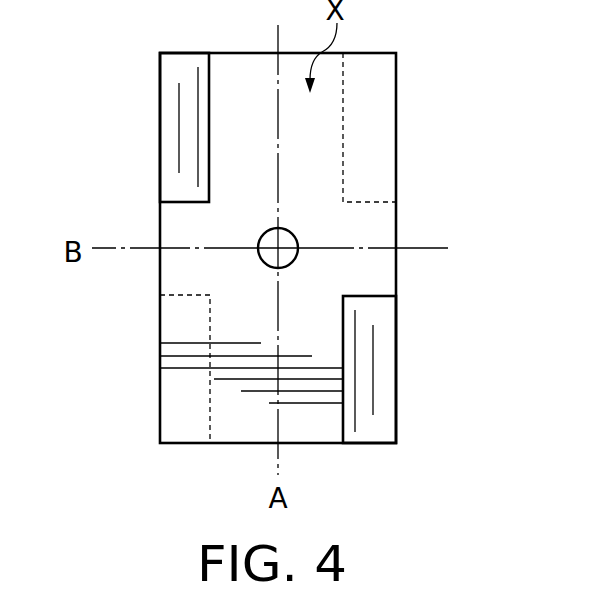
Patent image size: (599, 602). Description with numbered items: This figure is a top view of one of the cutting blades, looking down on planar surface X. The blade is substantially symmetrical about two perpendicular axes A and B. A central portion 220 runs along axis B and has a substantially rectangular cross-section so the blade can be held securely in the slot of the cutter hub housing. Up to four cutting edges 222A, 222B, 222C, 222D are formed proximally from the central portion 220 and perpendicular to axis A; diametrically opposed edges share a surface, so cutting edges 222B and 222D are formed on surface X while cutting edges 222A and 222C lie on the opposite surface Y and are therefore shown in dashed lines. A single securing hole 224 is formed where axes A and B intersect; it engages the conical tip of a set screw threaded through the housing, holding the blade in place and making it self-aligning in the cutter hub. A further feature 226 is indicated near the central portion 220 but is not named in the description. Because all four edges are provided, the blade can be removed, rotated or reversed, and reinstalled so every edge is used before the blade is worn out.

The central portion 220 is at (396, 273).
The cutting edge 222A is at (343, 160).
The cutting edge 222B is at (405, 374).
The cutting edge 222C is at (210, 398).
The cutting edge 222D is at (146, 131).
The securing hole 224 is at (295, 237).
The conductor lines 226 is at (202, 273).